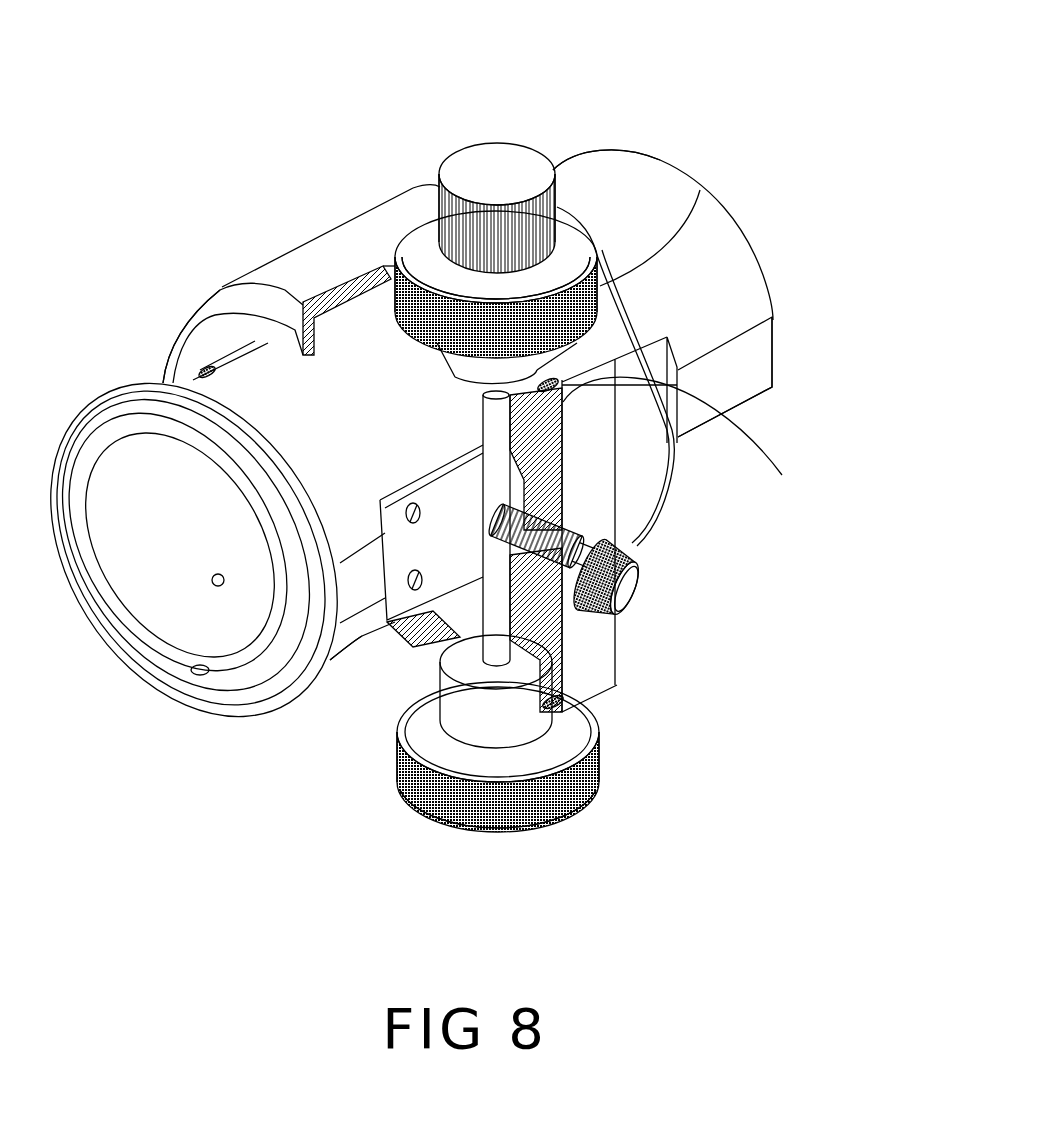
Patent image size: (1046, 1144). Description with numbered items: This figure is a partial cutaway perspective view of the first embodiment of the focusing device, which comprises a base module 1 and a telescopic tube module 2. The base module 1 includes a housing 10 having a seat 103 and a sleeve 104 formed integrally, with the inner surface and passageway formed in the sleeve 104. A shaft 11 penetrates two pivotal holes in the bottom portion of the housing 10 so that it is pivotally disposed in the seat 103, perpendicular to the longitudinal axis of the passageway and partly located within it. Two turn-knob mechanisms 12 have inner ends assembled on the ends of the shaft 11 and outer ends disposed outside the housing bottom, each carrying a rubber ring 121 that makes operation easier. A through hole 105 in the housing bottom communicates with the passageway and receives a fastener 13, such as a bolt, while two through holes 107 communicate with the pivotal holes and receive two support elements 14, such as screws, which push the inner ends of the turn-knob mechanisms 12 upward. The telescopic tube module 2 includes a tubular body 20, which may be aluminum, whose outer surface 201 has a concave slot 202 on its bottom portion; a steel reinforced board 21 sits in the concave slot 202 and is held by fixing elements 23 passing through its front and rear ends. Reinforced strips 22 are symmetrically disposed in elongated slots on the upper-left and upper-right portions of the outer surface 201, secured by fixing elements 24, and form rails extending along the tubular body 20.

The base module 1 is at (535, 848).
The telescopic tube module 2 is at (795, 428).
The housing 10 is at (362, 198).
The sleeve 104 is at (315, 255).
The reinforced strips 22 is at (240, 352).
The fixing elements 24 is at (217, 372).
The concave slot 202 is at (360, 637).
The fixing elements 23 is at (410, 513).
The reinforced board 21 is at (443, 567).
The turn-knob mechanisms 12 is at (477, 138).
The rubber ring 121 is at (603, 283).
The shaft 11 is at (495, 600).
The through hole 105 is at (632, 548).
The fastener 13 is at (623, 588).
The seat 103 is at (635, 542).
The through holes 107 is at (593, 468).
The support elements 14 is at (557, 387).
The tubular body 20 is at (578, 150).
The outer surface 201 is at (619, 188).